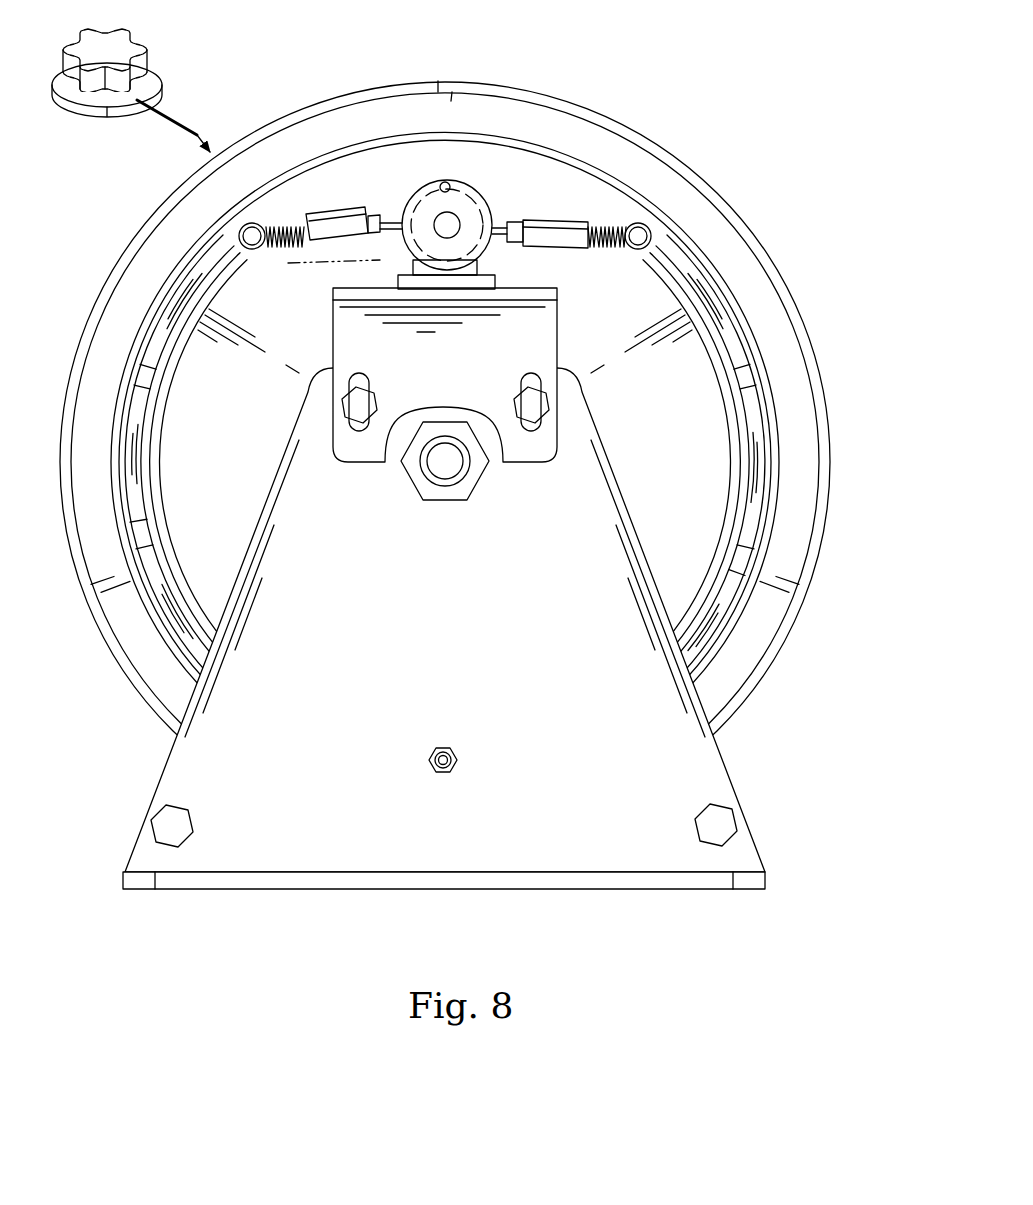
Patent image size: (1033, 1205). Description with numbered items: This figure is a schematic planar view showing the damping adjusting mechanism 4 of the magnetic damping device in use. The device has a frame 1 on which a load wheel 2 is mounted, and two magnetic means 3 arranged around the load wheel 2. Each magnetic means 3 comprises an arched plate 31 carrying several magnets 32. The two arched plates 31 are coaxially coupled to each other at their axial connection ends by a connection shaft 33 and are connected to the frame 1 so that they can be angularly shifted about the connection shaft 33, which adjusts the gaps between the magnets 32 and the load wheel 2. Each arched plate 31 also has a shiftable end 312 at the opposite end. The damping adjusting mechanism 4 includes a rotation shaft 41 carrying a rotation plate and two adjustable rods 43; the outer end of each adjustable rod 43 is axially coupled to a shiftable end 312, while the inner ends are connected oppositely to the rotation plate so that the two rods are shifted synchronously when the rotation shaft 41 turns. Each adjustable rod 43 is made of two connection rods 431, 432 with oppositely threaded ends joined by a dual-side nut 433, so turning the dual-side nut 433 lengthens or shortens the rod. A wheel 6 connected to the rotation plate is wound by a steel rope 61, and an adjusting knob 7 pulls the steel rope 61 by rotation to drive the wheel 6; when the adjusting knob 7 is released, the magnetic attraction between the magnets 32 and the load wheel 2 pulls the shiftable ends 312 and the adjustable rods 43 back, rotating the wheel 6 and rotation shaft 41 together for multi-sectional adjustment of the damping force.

The frame 1 is at (730, 882).
The load wheel 2 is at (752, 630).
The magnetic means 3 is at (227, 303).
The arched plate 31 is at (175, 383).
The magnet 32 is at (178, 295).
The shiftable end 312 is at (240, 230).
The connection shaft 33 is at (455, 755).
The damping adjusting mechanism 4 is at (489, 192).
The rotation shaft 41 is at (448, 217).
The adjustable rod 43 is at (489, 192).
The connection rod 431 is at (271, 228).
The connection rod 432 is at (367, 215).
The dual-side nut 433 is at (322, 234).
The wheel 6 is at (433, 171).
The steel rope 61 is at (396, 284).
The adjusting knob 7 is at (130, 58).